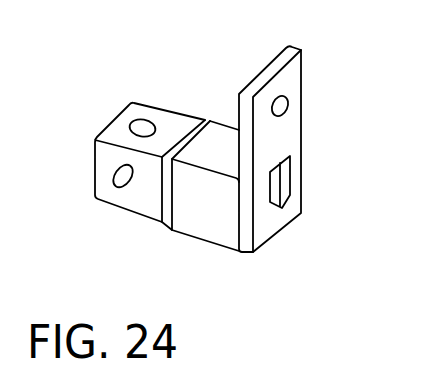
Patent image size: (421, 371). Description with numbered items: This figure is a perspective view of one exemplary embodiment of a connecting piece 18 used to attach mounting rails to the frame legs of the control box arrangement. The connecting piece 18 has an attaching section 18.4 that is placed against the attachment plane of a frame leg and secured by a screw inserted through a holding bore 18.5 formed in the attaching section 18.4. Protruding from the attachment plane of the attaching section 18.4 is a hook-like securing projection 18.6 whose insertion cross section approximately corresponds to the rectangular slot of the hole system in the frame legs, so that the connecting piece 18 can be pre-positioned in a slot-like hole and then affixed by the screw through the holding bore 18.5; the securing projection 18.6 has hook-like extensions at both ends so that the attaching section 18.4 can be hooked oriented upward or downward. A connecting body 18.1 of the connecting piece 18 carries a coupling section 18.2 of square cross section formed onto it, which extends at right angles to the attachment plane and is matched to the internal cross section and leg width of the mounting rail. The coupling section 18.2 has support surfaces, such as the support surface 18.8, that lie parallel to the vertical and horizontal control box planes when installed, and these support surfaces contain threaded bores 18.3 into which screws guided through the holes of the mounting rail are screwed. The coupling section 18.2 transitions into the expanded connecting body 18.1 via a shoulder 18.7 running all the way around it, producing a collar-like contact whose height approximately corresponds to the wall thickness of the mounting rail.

The connecting piece 18 is at (209, 178).
The connecting body 18.1 is at (228, 230).
The coupling section 18.2 is at (129, 162).
The threaded bores 18.3 is at (116, 173).
The attaching section 18.4 is at (302, 149).
The holding bore 18.5 is at (285, 96).
The securing projection 18.6 is at (285, 181).
The junction groove 18.7 is at (166, 216).
The support surface 18.8 is at (197, 114).